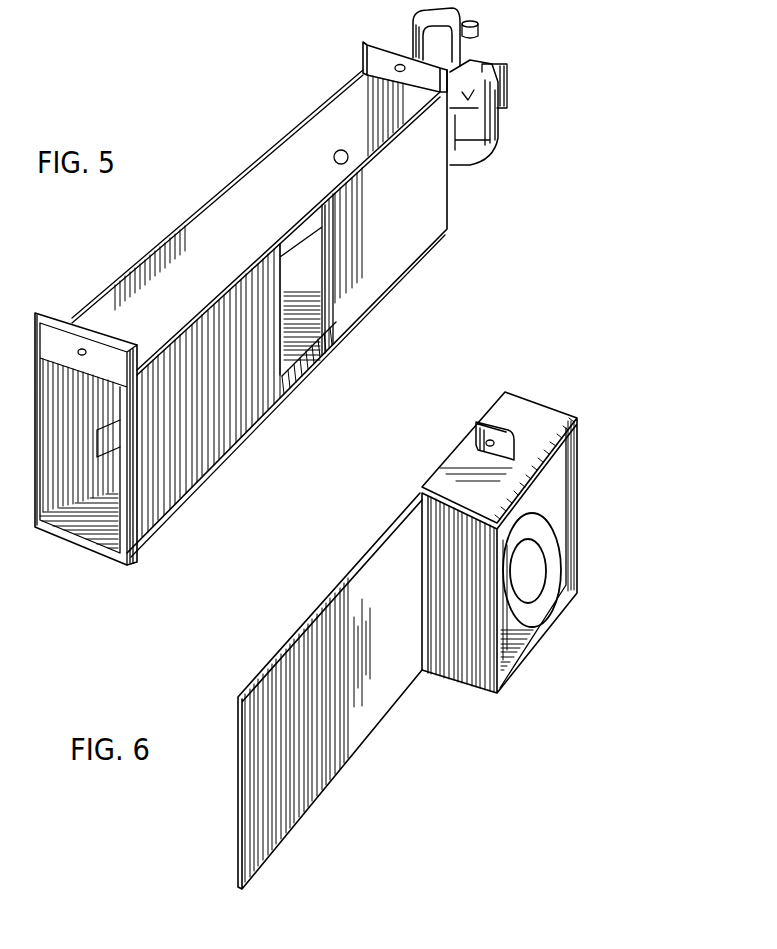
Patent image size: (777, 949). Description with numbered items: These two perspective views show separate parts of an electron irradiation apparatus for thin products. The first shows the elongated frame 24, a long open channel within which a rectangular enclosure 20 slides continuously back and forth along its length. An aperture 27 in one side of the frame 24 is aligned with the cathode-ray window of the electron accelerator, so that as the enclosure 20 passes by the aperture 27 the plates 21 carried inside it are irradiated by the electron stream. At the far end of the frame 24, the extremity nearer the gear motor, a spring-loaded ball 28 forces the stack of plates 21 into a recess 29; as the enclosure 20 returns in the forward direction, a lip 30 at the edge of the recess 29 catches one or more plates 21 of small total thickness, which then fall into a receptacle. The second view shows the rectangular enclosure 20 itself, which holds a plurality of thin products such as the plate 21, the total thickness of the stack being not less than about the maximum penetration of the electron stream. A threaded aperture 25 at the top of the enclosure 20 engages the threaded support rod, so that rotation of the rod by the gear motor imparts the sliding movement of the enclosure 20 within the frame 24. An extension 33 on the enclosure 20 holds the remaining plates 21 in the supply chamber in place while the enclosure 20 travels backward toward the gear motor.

In FIG. 6, the rectangular enclosure 20 is at (440, 678).
In FIG. 6, the plate 21 is at (545, 583).
In FIG. 5, the elongated frame 24 is at (410, 253).
In FIG. 6, the threaded aperture 25 is at (473, 440).
In FIG. 5, the aperture 27 is at (317, 362).
In FIG. 5, the spring-loaded ball 28 is at (334, 150).
In FIG. 5, the recess 29 is at (403, 134).
In FIG. 5, the lip 30 is at (366, 167).
In FIG. 6, the extension 33 is at (273, 852).